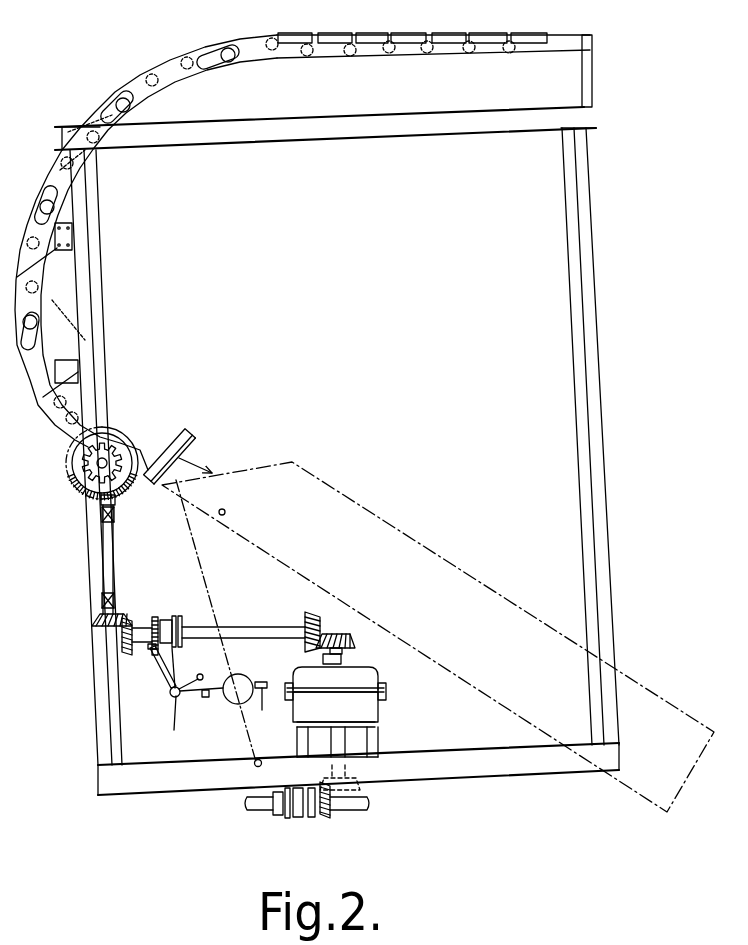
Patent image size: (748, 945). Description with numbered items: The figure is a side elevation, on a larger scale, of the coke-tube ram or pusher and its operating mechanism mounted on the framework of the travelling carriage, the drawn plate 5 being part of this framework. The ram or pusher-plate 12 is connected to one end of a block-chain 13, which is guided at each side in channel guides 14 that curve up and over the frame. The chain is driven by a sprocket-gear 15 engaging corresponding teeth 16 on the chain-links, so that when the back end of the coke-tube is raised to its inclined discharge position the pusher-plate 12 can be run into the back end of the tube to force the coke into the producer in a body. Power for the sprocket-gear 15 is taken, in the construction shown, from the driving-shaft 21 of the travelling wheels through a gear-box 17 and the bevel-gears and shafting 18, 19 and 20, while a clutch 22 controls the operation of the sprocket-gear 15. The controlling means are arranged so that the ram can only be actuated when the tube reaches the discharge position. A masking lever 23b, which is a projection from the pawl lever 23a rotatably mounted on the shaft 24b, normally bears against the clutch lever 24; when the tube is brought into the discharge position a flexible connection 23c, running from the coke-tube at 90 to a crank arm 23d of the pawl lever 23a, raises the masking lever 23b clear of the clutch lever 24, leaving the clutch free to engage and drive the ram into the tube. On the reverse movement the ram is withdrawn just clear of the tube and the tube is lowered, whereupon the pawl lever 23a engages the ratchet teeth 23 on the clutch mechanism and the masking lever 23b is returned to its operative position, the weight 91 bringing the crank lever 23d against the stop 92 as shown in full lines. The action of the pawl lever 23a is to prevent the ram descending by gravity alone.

The plate 5 is at (474, 610).
The ram or pusher-plate 12 is at (165, 448).
The block-chain 13 is at (407, 37).
The channel guides 14 is at (27, 303).
The sprocket-gear 15 is at (92, 475).
The teeth on the chain-links 16 is at (66, 432).
The gear-box 17 is at (358, 707).
The bevel-gear 18 is at (320, 637).
The bevel-gear 19 is at (125, 618).
The bevel-gear and shafting 20 is at (100, 497).
The driving-shaft 21 is at (337, 800).
The clutch 22 is at (173, 627).
The ratchet teeth 23 is at (160, 622).
The pawl lever 23a is at (170, 680).
The masking lever 23b is at (170, 691).
The flexible connection 23c is at (248, 616).
The crank arm 23d is at (275, 711).
The clutch lever 24 is at (176, 655).
The shaft 24b is at (203, 697).
The coke-tube connection point 90 is at (225, 512).
The weight 91 is at (242, 697).
The stop 92 is at (199, 681).